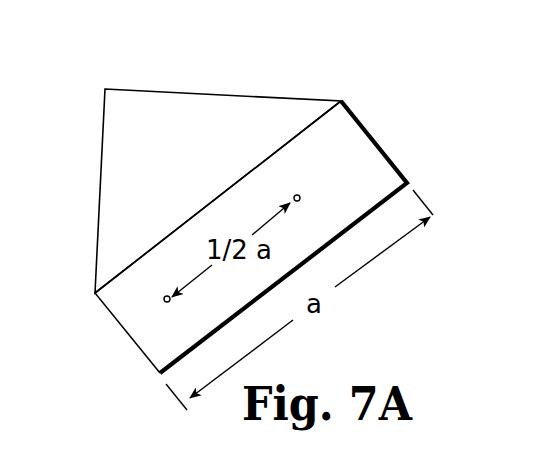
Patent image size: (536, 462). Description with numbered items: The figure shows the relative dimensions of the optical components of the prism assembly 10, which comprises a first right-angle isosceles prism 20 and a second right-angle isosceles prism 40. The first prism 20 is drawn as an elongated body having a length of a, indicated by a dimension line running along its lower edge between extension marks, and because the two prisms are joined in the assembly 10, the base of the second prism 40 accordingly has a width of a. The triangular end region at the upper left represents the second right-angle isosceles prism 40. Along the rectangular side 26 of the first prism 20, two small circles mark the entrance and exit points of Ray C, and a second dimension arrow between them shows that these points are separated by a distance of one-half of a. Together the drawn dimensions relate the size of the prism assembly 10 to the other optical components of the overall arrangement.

The prism assembly 10 is at (261, 194).
The first right-angle isosceles prism 20 is at (261, 226).
The rectangular side 26 is at (368, 198).
The second right-angle isosceles prism 40 is at (185, 92).